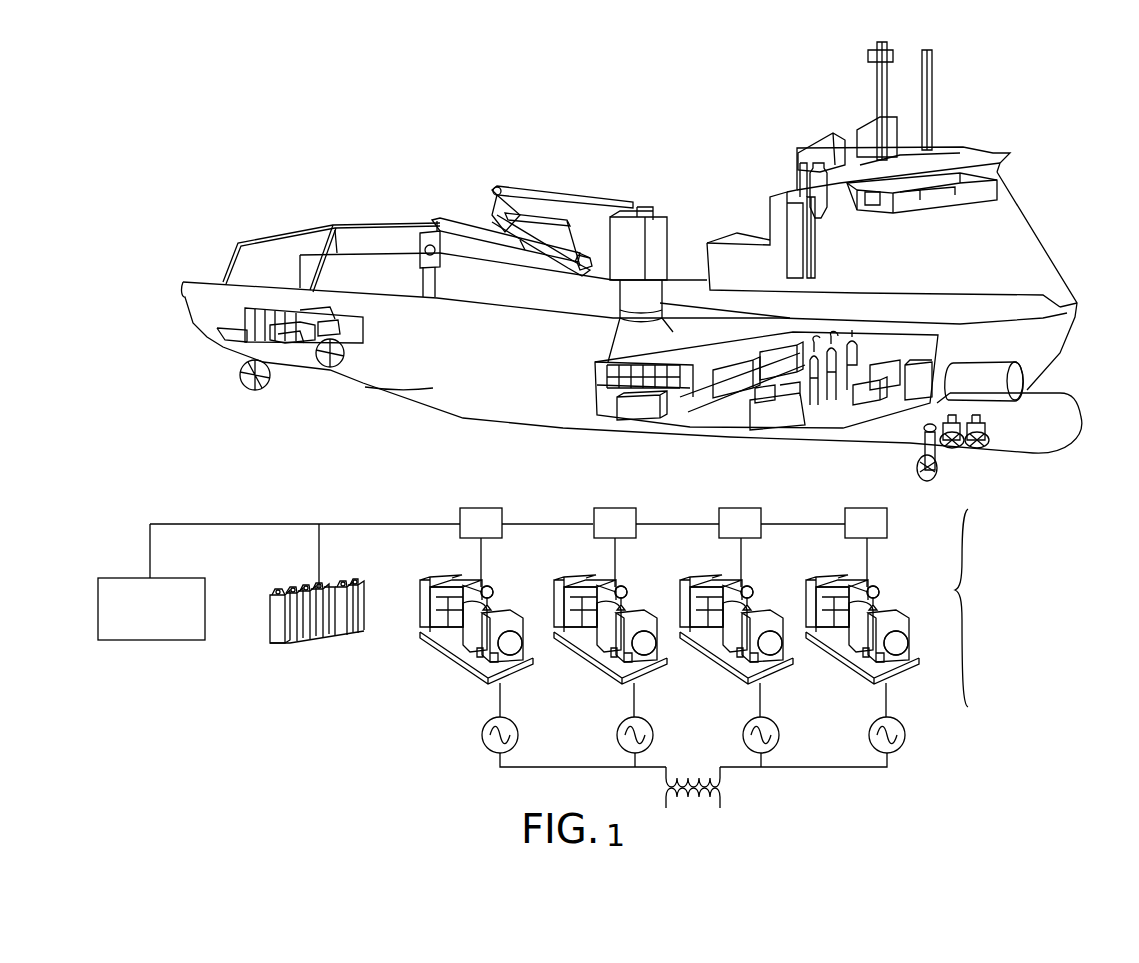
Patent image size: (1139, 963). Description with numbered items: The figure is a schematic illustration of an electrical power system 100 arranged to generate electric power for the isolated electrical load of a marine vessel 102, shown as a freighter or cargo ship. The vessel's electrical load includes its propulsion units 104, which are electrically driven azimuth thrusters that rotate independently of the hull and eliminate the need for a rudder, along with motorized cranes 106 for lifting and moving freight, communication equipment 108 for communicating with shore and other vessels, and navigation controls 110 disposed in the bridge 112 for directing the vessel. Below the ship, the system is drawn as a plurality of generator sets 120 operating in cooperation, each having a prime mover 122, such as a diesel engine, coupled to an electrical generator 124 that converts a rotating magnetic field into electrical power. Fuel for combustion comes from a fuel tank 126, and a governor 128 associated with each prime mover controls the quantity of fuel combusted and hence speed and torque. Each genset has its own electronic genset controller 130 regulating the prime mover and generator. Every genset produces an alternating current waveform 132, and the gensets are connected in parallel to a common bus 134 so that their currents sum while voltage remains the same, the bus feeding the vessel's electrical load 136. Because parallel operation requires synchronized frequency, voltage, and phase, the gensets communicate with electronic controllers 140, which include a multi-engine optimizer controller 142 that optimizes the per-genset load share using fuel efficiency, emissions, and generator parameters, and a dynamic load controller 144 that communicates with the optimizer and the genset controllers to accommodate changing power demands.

The electrical power system 100 is at (733, 433).
The marine vessel 102 is at (717, 132).
The propulsion units 104 is at (240, 378).
The motorized cranes 106 is at (392, 222).
The communication equipment 108 is at (935, 63).
The navigation controls 110 is at (917, 180).
The bridge 112 is at (1027, 163).
The generator set 120 is at (908, 668).
The prime mover 122 is at (443, 593).
The electrical generator 124 is at (508, 627).
The fuel tank 126 is at (1015, 383).
The governor 128 is at (487, 587).
The electronic genset controller 130 is at (673, 523).
The alternating current waveform 132 is at (482, 730).
The common bus 134 is at (828, 770).
The electrical load 136 is at (693, 800).
The electronic controllers 140 is at (323, 515).
The multi-engine optimizer controller 142 is at (330, 645).
The dynamic load controller 144 is at (150, 642).